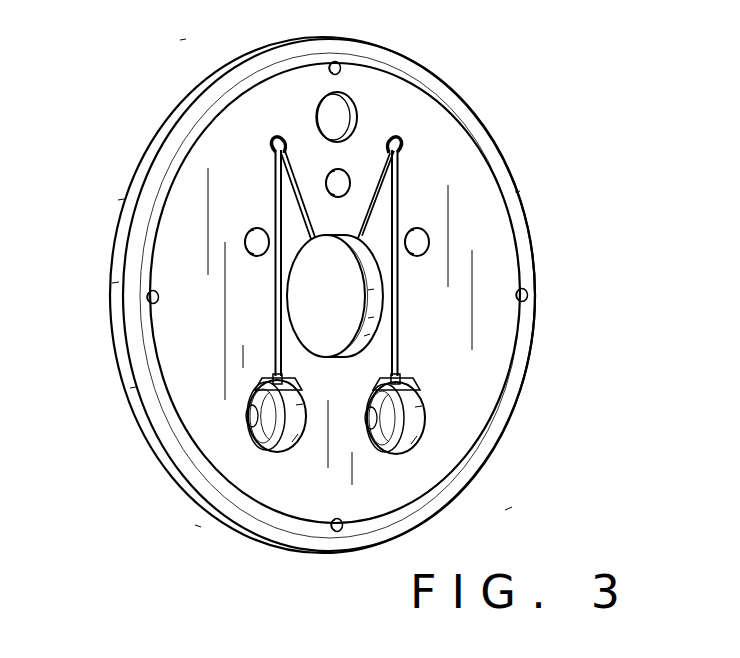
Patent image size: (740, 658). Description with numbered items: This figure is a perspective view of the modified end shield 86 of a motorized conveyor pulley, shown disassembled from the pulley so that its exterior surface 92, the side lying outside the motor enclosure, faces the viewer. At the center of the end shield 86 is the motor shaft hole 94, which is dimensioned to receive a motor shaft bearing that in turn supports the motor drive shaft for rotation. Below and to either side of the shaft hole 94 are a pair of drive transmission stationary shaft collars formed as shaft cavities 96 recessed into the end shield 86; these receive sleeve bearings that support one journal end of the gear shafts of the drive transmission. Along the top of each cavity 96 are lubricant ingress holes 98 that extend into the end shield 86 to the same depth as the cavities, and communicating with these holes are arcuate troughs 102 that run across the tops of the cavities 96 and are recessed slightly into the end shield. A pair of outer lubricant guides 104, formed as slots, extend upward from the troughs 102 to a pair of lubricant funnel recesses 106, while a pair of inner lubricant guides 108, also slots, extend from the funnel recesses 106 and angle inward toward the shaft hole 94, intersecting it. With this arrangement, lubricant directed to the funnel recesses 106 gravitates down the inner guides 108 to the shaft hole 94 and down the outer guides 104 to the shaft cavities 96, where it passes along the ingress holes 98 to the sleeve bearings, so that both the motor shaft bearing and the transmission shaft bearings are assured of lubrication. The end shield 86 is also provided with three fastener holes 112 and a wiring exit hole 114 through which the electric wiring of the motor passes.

The modified end shield 86 is at (500, 257).
The exterior surface 92 is at (182, 217).
The center motor shaft hole 94 is at (368, 300).
The shaft cavities 96 is at (288, 432).
The lubricant ingress holes 98 is at (268, 378).
The arcuate troughs 102 is at (255, 381).
The outer lubricant guides 104 is at (273, 303).
The lubricant funnel recesses 106 is at (271, 143).
The inner lubricant guides 108 is at (296, 195).
The fastener holes 112 is at (347, 173).
The wiring exit hole 114 is at (347, 100).